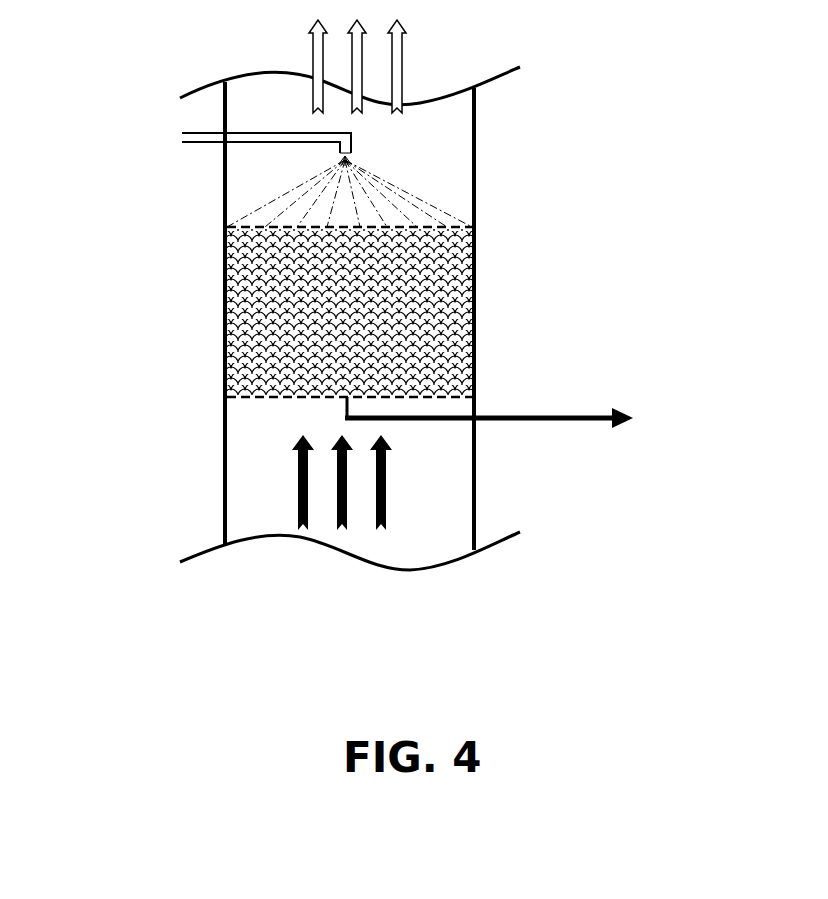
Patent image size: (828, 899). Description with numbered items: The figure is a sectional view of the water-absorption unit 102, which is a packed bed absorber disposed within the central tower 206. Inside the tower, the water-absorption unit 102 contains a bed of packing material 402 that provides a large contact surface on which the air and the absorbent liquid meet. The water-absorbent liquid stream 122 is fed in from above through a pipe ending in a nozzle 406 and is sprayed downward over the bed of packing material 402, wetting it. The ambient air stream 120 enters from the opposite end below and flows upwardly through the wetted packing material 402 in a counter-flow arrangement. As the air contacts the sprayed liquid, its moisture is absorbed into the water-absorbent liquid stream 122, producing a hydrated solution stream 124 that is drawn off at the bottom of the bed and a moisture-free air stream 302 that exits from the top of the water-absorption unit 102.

The water-absorption unit 102 is at (225, 317).
The ambient air stream 120 is at (402, 488).
The water-absorbent liquid stream 122 is at (193, 143).
The hydrated solution stream 124 is at (492, 415).
The central tower 206 is at (225, 460).
The moisture-free air stream 302 is at (412, 43).
The packing material 402 is at (432, 312).
The spray nozzle 406 is at (357, 148).